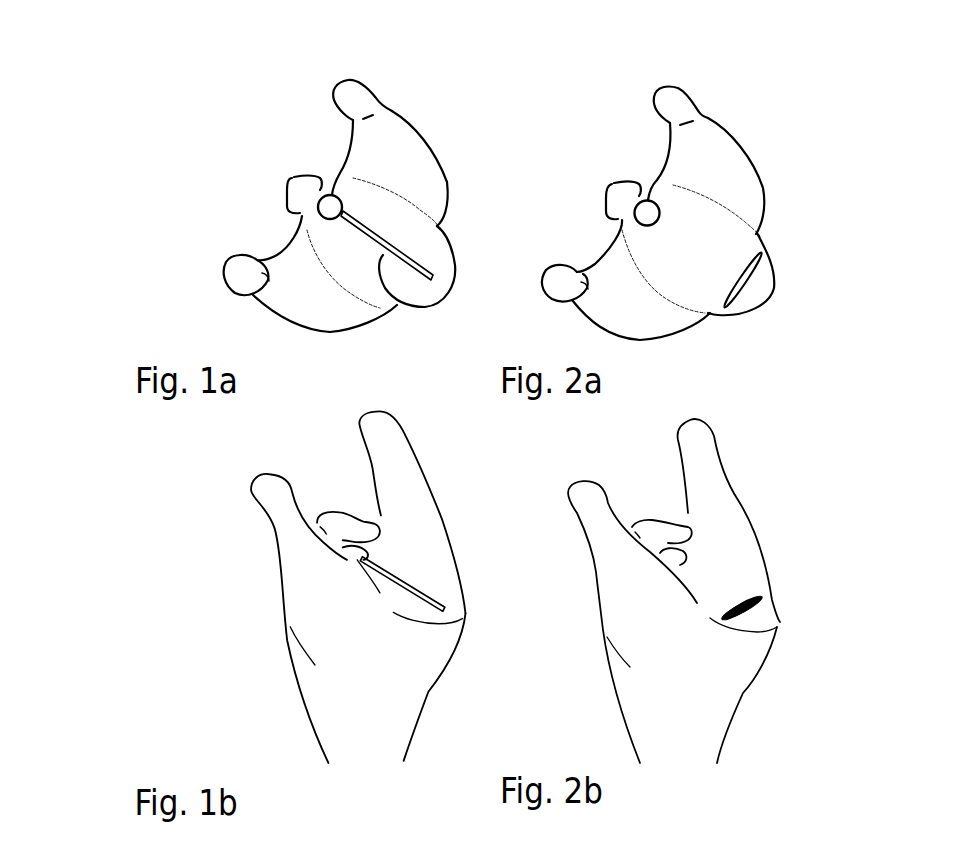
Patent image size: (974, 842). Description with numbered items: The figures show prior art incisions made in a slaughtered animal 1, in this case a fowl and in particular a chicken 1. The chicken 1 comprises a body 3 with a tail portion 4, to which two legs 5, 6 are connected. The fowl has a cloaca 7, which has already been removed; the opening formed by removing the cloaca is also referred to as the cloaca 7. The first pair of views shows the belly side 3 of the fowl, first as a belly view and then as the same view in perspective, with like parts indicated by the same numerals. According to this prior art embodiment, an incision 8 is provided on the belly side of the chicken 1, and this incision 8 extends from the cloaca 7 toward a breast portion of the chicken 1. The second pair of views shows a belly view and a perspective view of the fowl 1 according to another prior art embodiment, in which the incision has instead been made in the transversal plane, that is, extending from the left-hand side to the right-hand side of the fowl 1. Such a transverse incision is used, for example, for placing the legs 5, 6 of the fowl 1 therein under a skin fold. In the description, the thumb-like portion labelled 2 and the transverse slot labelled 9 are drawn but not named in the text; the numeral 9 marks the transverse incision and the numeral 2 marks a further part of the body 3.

In FIG. 1A, the slaughtered animal 1 is at (158, 187).
In FIG. 2A, the slaughtered animal 1 is at (813, 155).
In FIG. 1B, the slaughtered animal 1 is at (187, 657).
In FIG. 2B, the slaughtered animal 1 is at (837, 670).
In FIG. 1B, the thumb 2 is at (330, 695).
In FIG. 1A, the body 3 is at (433, 240).
In FIG. 1B, the body 3 is at (403, 685).
In FIG. 1A, the tail portion 4 is at (300, 190).
In FIG. 1B, the tail portion 4 is at (323, 513).
In FIG. 1A, the leg 5 is at (292, 303).
In FIG. 1B, the leg 5 is at (283, 575).
In FIG. 2B, the leg 5 is at (610, 572).
In FIG. 1A, the leg 6 is at (397, 150).
In FIG. 1B, the leg 6 is at (397, 493).
In FIG. 2B, the leg 6 is at (717, 478).
In FIG. 1A, the cloaca 7 is at (332, 200).
In FIG. 2A, the cloaca 7 is at (647, 205).
In FIG. 1B, the cloaca 7 is at (320, 510).
In FIG. 2B, the cloaca 7 is at (690, 523).
In FIG. 1A, the incision 8 is at (382, 262).
In FIG. 1B, the incision 8 is at (407, 573).
In FIG. 2A, the slot 9 is at (768, 264).
In FIG. 2B, the slot 9 is at (743, 597).